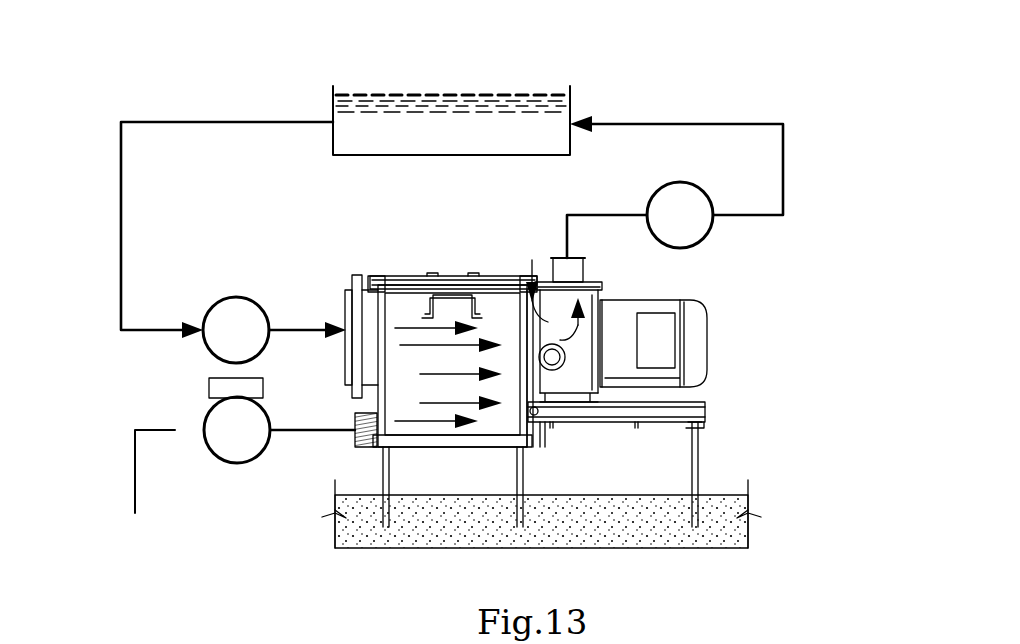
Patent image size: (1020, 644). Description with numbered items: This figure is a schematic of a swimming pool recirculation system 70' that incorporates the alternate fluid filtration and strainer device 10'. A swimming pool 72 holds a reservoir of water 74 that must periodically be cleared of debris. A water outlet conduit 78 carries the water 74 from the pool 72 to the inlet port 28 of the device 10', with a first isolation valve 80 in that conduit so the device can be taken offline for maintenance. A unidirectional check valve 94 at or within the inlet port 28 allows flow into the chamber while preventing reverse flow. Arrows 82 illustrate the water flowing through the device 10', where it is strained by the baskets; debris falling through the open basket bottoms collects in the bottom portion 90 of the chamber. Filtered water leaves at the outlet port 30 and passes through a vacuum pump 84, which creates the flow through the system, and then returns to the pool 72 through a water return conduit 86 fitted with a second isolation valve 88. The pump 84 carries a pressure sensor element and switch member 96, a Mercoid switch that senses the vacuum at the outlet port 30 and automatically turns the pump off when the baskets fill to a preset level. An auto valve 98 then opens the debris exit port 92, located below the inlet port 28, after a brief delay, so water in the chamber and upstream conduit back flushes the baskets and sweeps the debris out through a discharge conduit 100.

The fluid filtration and strainer device 10' is at (453, 313).
The inlet port 28 is at (363, 283).
The outlet port 30 is at (532, 260).
The swimming pool recirculation system 70' is at (166, 390).
The swimming pool 72 is at (524, 80).
The water 74 is at (418, 125).
The water outlet conduit 78 is at (225, 122).
The first isolation valve 80 is at (230, 318).
The arrows 82 is at (430, 375).
The vacuum pump 84 is at (665, 296).
The water return conduit 86 is at (585, 262).
The second isolation valve 88 is at (676, 195).
The bottom portion 90 is at (420, 443).
The debris exit port 92 is at (358, 445).
The unidirectional check valve 94 is at (362, 335).
The pressure sensor element and switch member 96 is at (552, 365).
The auto valve 98 is at (232, 452).
The discharge conduit 100 is at (133, 468).